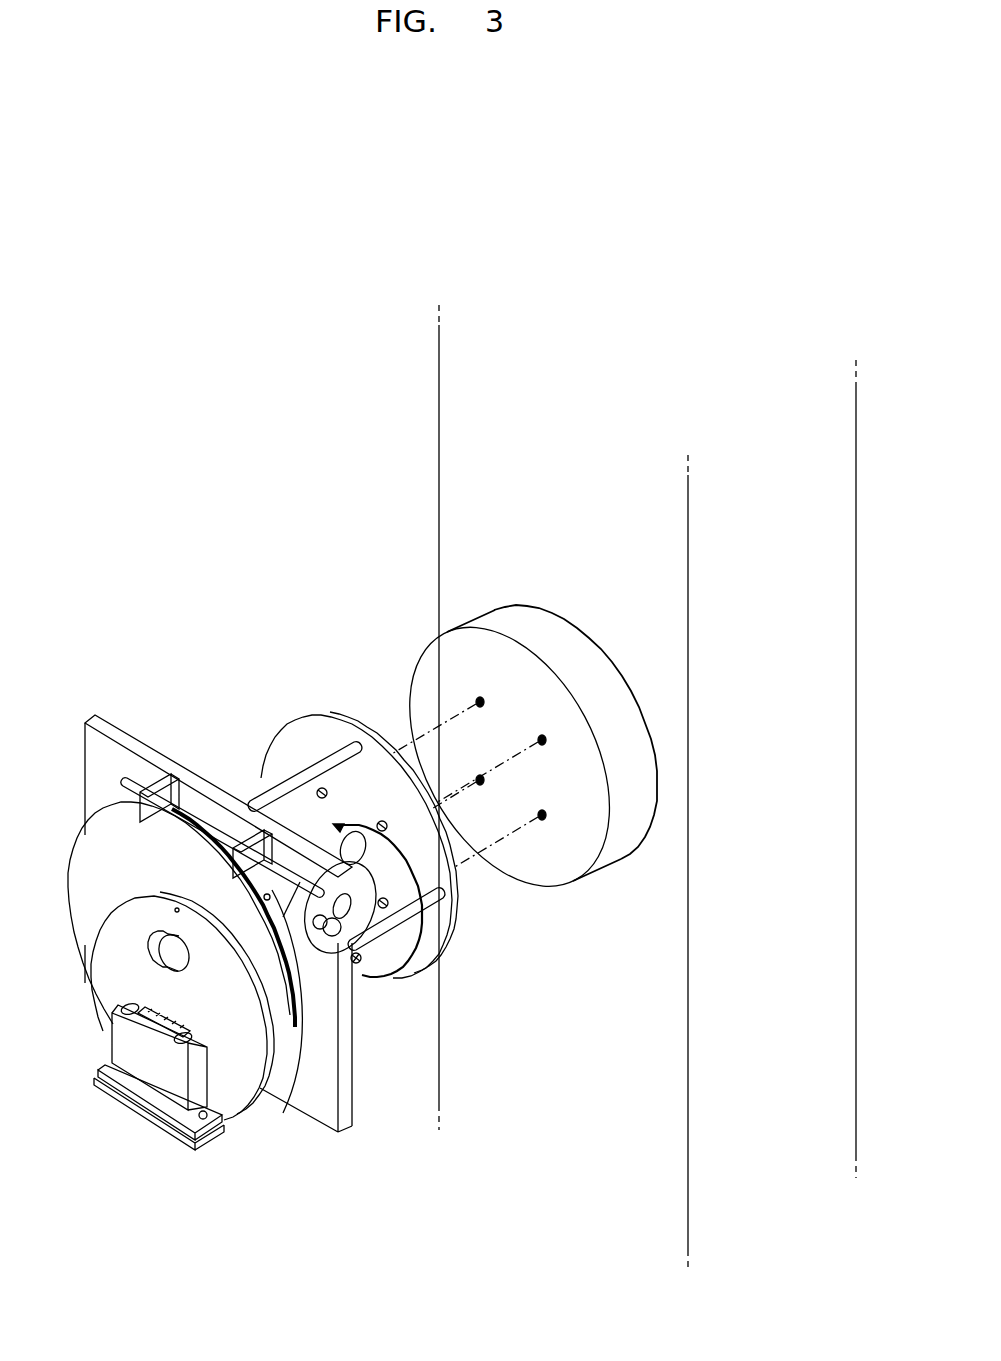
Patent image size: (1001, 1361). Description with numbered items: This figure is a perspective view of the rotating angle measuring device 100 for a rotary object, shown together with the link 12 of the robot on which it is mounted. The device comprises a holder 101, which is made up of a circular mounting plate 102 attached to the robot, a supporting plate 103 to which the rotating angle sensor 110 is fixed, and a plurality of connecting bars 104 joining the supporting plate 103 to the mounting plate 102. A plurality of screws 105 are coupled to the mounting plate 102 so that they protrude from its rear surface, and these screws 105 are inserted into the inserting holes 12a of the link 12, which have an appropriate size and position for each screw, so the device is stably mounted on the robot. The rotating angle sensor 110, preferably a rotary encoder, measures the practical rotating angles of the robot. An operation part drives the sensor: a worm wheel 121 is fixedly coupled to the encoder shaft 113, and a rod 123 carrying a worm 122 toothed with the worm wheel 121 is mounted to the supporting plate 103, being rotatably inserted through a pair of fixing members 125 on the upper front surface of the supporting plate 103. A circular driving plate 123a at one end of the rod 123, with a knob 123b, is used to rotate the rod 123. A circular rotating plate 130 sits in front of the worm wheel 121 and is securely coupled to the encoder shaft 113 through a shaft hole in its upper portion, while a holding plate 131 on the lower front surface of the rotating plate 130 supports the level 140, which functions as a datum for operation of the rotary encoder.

The link 12 is at (445, 478).
The inserting holes 12a is at (477, 700).
The rotating angle measuring device 100 is at (64, 661).
The holder 101 is at (337, 662).
The mounting plate 102 is at (293, 740).
The supporting plate 103 is at (107, 727).
The connecting bars 104 is at (322, 748).
The screws 105 is at (382, 821).
The rotating angle sensor 110 is at (458, 906).
The encoder shaft 113 is at (160, 953).
The worm wheel 121 is at (108, 814).
The worm 122 is at (187, 813).
The rod 123 is at (305, 1080).
The driving plate 123a is at (441, 978).
The knob 123b is at (357, 962).
The fixing members 125 is at (157, 780).
The rotating plate 130 is at (107, 990).
The holding plate 131 is at (95, 1074).
The level 140 is at (118, 1036).